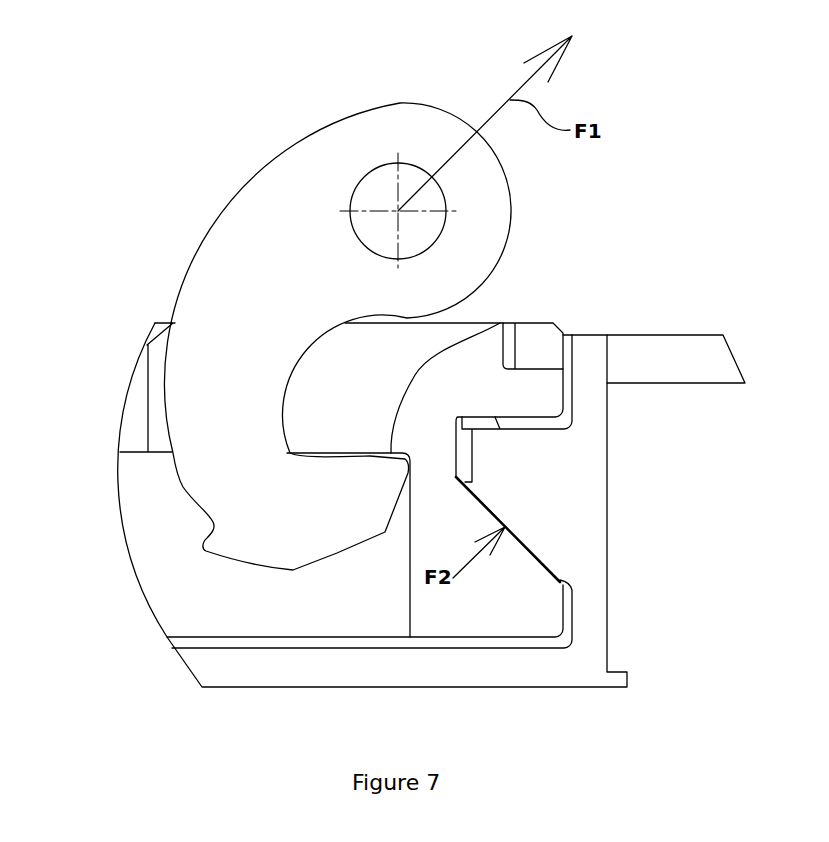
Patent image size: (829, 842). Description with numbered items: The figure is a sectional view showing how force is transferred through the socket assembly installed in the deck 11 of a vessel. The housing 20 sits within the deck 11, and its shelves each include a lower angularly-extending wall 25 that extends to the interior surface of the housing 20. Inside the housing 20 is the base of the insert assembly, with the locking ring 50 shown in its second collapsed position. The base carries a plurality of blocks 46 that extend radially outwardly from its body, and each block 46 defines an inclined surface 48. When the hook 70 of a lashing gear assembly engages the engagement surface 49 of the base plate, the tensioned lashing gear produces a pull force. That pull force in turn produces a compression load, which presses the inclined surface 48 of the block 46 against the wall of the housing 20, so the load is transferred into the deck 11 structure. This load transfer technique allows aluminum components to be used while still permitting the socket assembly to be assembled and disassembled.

The deck 11 is at (648, 335).
The housing 20 is at (607, 528).
The lower angularly-extending wall 25 is at (528, 553).
The block 46 is at (528, 610).
The inclined surface 48 is at (472, 482).
The engagement surface 49 is at (500, 323).
The locking ring 50 is at (537, 323).
The hook 70 is at (272, 205).